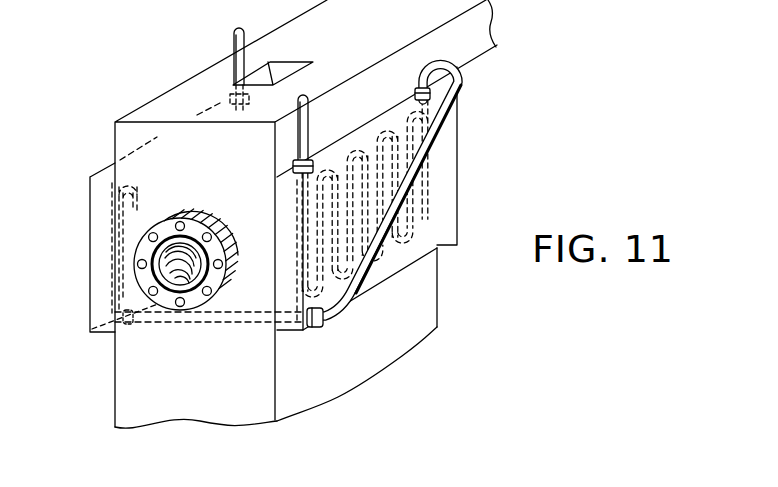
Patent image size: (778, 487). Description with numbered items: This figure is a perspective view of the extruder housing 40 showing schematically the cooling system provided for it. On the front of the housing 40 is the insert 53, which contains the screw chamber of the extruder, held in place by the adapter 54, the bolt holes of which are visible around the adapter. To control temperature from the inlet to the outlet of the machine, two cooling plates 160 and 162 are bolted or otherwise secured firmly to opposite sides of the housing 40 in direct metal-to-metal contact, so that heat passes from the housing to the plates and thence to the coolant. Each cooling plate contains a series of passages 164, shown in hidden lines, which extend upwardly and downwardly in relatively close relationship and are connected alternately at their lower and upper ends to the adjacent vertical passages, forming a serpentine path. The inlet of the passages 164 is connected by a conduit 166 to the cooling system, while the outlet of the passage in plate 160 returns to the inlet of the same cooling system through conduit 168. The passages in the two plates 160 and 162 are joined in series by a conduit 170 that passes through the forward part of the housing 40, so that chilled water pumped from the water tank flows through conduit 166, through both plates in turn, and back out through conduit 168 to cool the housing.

The housing 40 is at (200, 384).
The insert 53 is at (198, 280).
The adapter 54 is at (205, 232).
The cooling plate 160 is at (90, 317).
The cooling plate 162 is at (440, 247).
The passages 164 is at (430, 204).
The conduit 166 is at (309, 127).
The conduit 168 is at (234, 40).
The conduit 170 is at (258, 326).